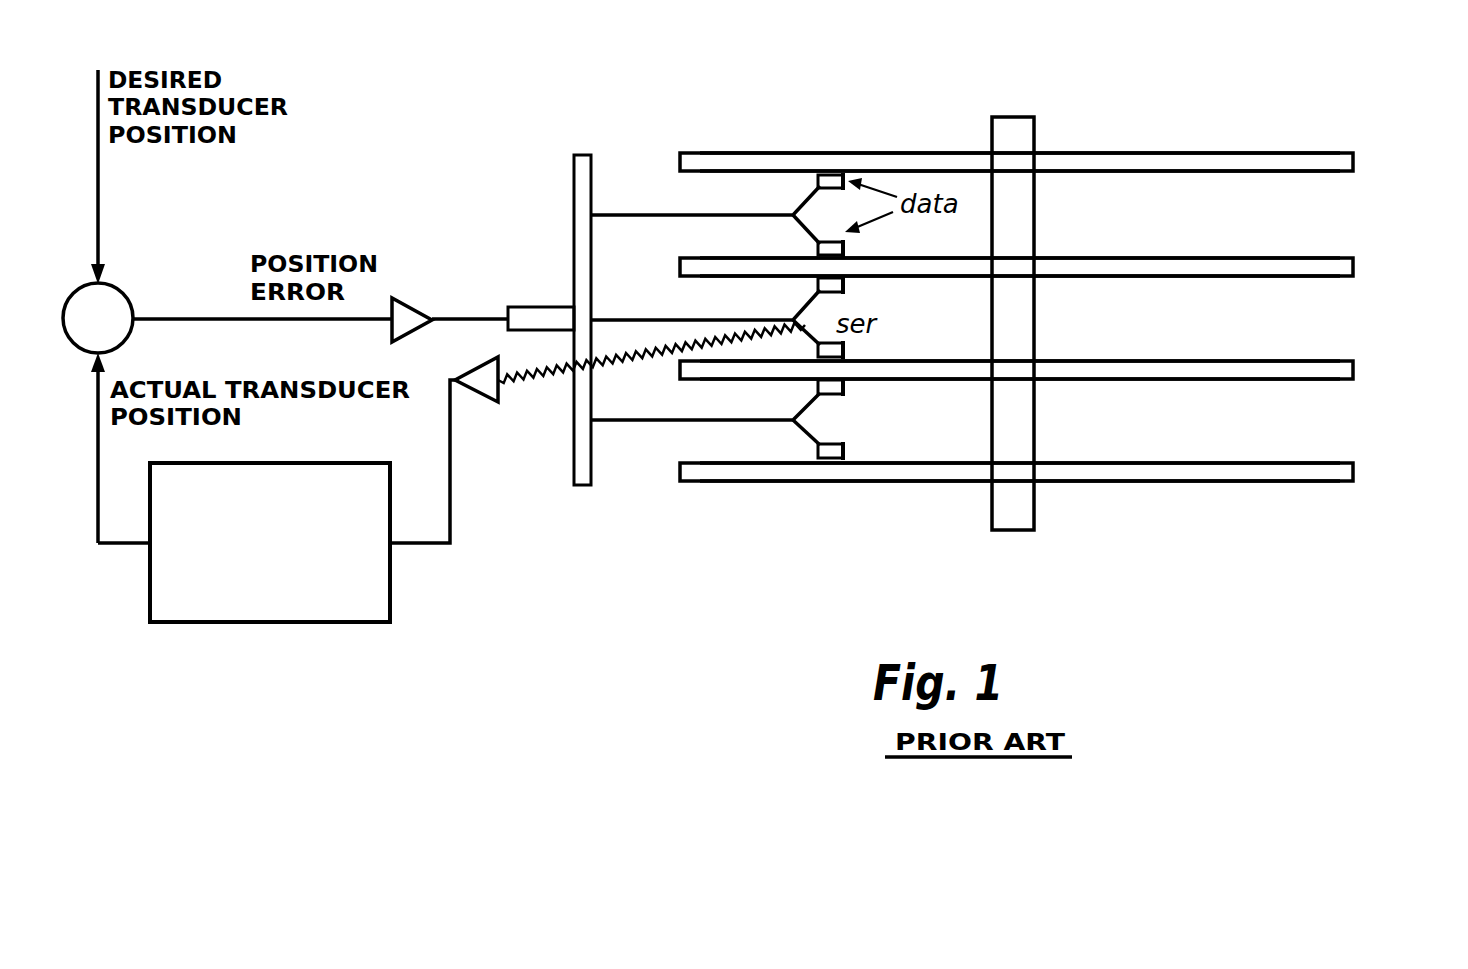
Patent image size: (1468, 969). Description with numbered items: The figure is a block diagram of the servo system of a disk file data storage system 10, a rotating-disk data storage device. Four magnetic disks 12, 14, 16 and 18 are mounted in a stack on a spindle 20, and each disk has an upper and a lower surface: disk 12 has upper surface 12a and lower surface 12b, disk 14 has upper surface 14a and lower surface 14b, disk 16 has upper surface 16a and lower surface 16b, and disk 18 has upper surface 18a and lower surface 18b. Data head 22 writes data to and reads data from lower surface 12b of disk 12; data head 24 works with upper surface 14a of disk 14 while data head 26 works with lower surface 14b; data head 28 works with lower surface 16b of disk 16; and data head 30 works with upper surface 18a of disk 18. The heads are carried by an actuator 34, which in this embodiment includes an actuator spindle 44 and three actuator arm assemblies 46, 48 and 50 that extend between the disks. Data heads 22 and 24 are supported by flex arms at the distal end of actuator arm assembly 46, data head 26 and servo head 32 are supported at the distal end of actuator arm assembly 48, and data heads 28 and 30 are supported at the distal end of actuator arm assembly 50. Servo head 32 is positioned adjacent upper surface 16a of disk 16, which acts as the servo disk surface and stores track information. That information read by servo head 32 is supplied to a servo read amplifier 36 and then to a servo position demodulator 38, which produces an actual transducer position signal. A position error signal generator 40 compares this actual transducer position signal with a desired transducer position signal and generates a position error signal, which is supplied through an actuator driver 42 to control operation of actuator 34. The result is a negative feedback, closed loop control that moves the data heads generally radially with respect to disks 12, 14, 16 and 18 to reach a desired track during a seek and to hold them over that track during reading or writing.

The disk file data storage system 10 is at (1266, 60).
The magnetic disk 12 is at (1355, 162).
The upper surface of disk 12 12a is at (1295, 153).
The lower surface of disk 12 12b is at (1330, 172).
The magnetic disk 14 is at (1355, 265).
The upper surface of disk 14 14a is at (1220, 263).
The lower surface of disk 14 14b is at (1262, 276).
The magnetic disk 16 is at (1355, 368).
The upper surface of disk 16 16a is at (1250, 361).
The lower surface of disk 16 16b is at (1310, 380).
The magnetic disk 18 is at (1355, 470).
The upper surface of disk 18 18a is at (1255, 418).
The lower surface of disk 18 18b is at (1290, 482).
The spindle 20 is at (1010, 117).
The data head 22 is at (850, 176).
The data head 24 is at (848, 250).
The data head 26 is at (847, 283).
The data head 28 is at (848, 385).
The data head 30 is at (848, 450).
The servo head 32 is at (848, 350).
The actuator 34 is at (588, 328).
The servo read amplifier 36 is at (477, 392).
The servo position demodulator 38 is at (392, 605).
The position error signal generator 40 is at (118, 282).
The actuator driver 42 is at (407, 300).
The actuator spindle 44 is at (585, 153).
The actuator arm assembly 46 is at (648, 212).
The actuator arm assembly 48 is at (618, 318).
The actuator arm assembly 50 is at (600, 422).